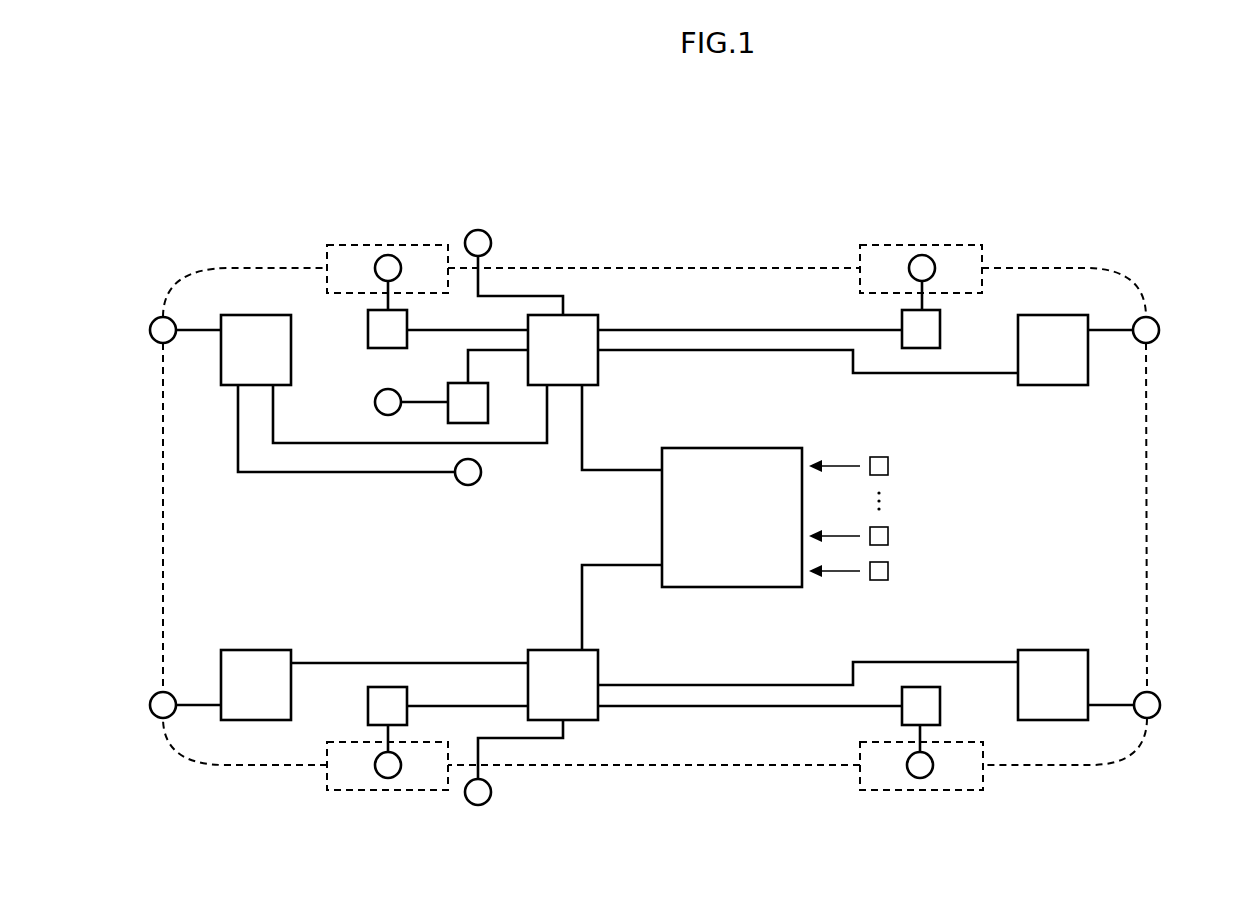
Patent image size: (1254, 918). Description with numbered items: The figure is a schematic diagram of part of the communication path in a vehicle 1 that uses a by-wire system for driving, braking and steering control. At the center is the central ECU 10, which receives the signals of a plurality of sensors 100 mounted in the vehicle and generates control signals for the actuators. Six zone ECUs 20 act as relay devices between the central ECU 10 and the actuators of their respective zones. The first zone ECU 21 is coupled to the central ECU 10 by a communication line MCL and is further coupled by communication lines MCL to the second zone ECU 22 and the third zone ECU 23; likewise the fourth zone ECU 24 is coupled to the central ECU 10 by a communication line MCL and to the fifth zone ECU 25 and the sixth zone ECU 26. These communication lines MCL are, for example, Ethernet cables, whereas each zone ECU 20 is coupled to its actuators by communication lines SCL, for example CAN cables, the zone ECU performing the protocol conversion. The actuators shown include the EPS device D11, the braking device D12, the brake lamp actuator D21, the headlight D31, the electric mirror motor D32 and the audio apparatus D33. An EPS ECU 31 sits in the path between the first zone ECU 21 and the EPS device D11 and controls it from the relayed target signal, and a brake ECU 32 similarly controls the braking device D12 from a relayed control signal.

The vehicle 1 is at (1130, 149).
The central ECU 10 is at (770, 455).
The sensors 100 is at (888, 466).
The zone ECU 20 is at (678, 462).
The first zone ECU 21 is at (598, 370).
The second zone ECU 22 is at (1053, 378).
The third zone ECU 23 is at (255, 325).
The fourth zone ECU 24 is at (598, 665).
The fifth zone ECU 25 is at (1053, 655).
The sixth zone ECU 26 is at (258, 660).
The EPS ECU 31 is at (460, 385).
The brake ECU 32 is at (368, 330).
The EPS device D11 is at (375, 400).
The braking device D12 is at (388, 255).
The brake lamp actuator D21 is at (1160, 330).
The headlight D31 is at (150, 330).
The electric mirror motor D32 is at (478, 230).
The audio apparatus D33 is at (468, 485).
The communication line SCL is at (200, 327).
The communication line MCL is at (612, 470).